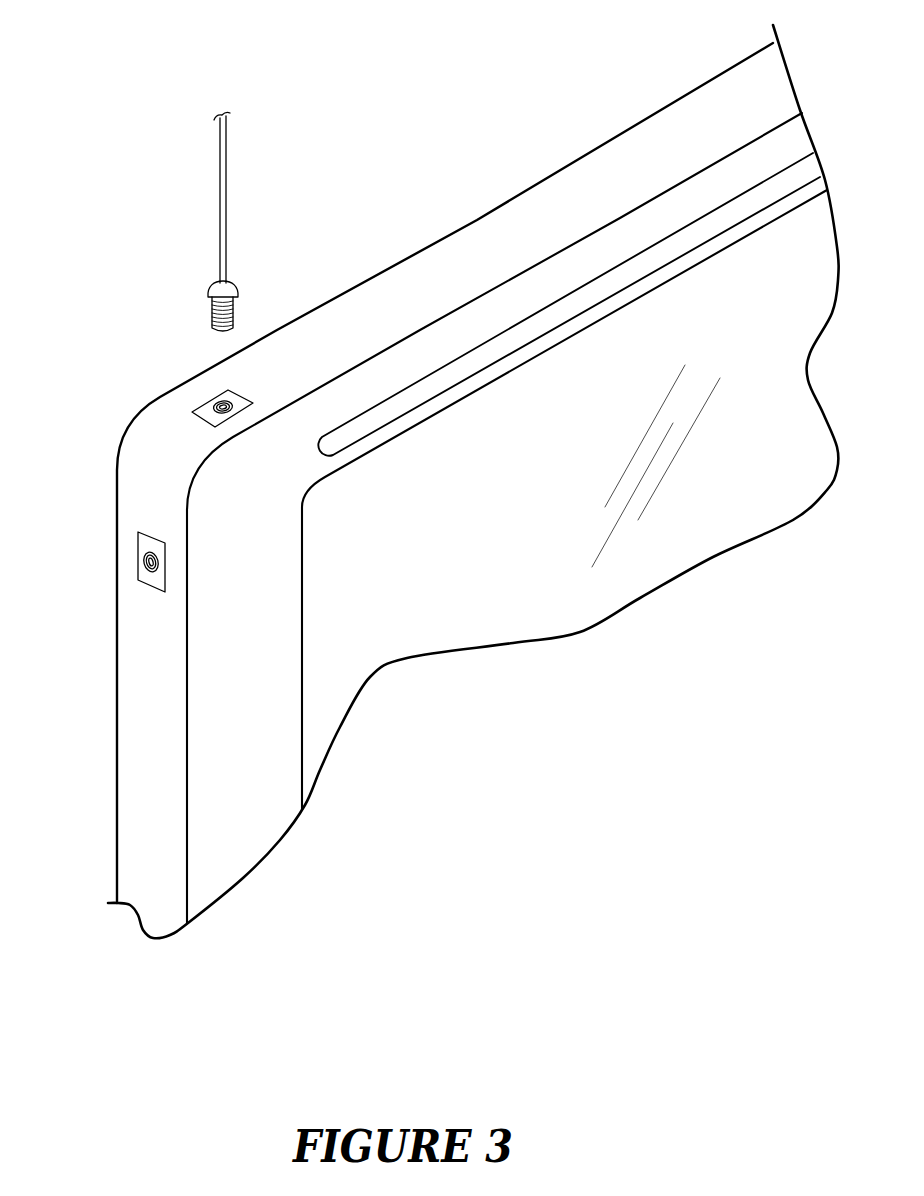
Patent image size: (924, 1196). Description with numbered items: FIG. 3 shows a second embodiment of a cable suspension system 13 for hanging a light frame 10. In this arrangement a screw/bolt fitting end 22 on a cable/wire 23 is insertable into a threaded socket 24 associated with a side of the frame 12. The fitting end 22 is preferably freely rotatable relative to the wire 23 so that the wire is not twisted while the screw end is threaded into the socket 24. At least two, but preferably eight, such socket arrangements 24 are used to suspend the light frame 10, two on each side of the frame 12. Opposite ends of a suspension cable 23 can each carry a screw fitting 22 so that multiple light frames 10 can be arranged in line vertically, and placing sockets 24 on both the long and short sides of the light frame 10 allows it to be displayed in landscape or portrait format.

The light frame 10 is at (436, 130).
The frame 12 is at (668, 132).
The cable suspension system 13 is at (126, 151).
The screw/bolt fitting end 22 is at (212, 308).
The cable/wire 23 is at (218, 200).
The threaded socket 24 is at (212, 408).